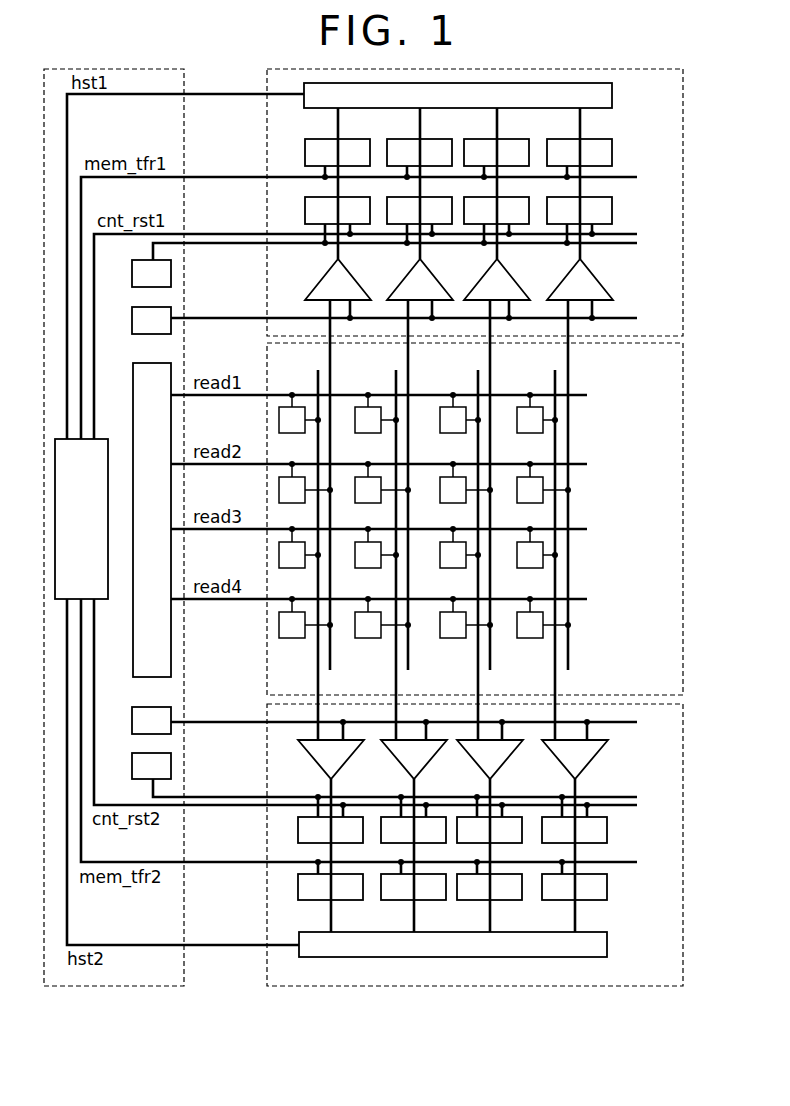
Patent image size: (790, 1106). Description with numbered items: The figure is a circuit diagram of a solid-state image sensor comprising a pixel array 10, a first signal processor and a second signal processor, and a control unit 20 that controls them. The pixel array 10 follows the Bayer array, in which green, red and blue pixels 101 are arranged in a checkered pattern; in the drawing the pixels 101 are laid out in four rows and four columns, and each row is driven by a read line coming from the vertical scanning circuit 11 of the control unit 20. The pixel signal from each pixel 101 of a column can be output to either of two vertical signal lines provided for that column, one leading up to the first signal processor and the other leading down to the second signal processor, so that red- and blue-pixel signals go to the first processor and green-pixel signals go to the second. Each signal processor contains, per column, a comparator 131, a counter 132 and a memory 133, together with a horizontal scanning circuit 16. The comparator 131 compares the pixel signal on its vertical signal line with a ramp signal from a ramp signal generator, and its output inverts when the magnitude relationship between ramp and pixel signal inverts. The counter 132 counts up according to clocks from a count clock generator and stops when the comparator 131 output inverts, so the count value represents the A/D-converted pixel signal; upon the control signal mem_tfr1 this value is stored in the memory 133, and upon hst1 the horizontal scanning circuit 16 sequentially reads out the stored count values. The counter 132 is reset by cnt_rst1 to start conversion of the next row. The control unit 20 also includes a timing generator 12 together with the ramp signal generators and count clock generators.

The control unit 20 is at (122, 988).
The pixel array 10 is at (683, 381).
The vertical scanning circuit 11 is at (171, 655).
The timing generator 12 is at (103, 439).
The horizontal scanning circuit 16 is at (612, 86).
The pixel 101 is at (279, 420).
The comparator 131 is at (600, 282).
The counter 132 is at (612, 208).
The memory 133 is at (612, 150).